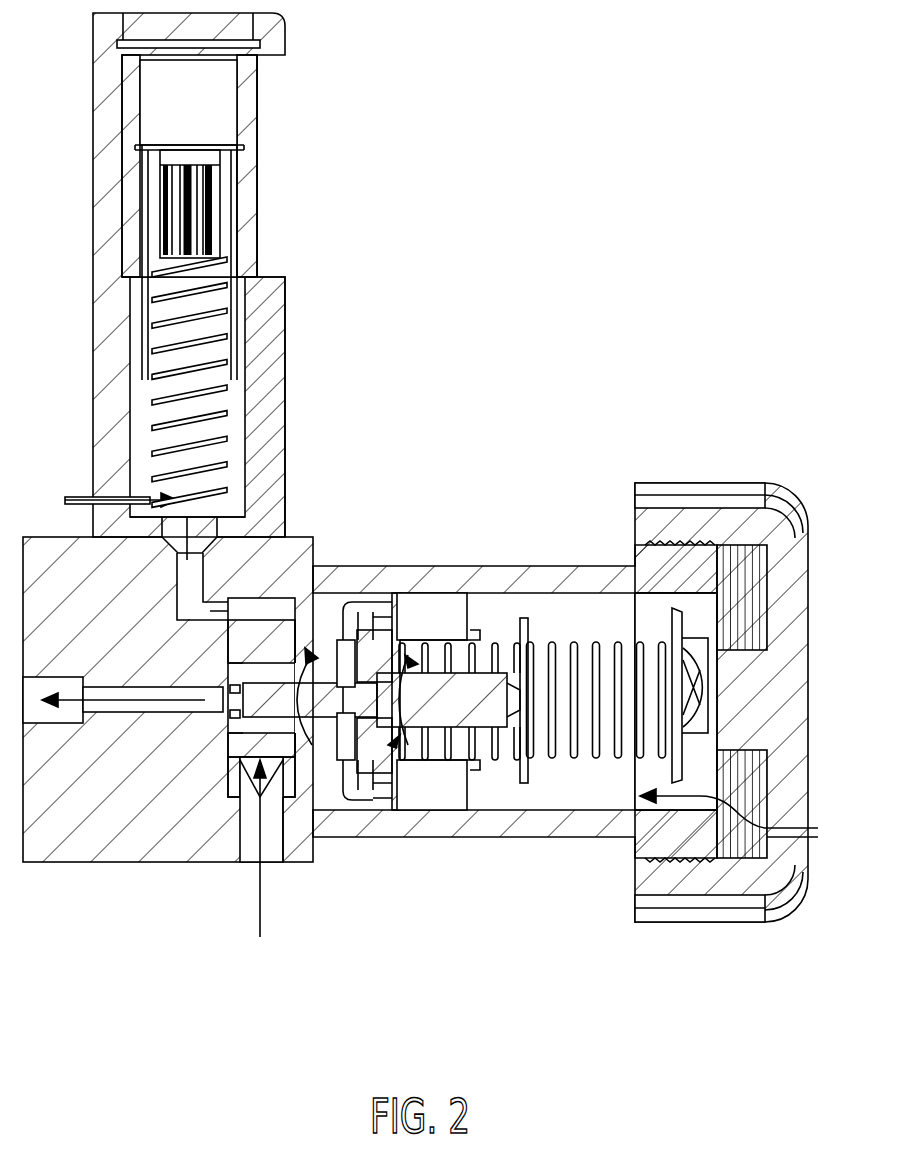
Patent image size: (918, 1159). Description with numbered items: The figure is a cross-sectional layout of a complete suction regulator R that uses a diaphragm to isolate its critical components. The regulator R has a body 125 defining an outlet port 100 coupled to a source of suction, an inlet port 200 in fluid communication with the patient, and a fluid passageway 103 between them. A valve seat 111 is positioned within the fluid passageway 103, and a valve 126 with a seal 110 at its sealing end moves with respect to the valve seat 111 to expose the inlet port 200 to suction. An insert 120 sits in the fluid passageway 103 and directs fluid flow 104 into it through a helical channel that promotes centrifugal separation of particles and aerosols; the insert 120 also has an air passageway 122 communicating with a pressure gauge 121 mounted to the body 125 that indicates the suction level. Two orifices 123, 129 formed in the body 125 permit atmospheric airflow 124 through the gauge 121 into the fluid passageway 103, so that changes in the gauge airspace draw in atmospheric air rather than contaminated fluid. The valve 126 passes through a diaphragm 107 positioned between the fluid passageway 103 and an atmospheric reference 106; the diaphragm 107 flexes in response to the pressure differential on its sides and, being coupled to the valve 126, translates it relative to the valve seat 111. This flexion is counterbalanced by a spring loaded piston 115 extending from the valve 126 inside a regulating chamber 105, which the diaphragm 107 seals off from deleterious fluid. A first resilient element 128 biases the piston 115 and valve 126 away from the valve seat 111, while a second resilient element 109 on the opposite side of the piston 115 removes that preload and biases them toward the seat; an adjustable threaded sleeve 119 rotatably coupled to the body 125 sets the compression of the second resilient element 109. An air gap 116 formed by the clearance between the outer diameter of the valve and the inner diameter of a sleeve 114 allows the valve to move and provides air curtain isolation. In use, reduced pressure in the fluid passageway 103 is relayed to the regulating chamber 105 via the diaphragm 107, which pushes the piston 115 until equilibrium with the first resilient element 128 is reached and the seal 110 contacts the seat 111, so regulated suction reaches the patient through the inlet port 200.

The outlet port 100 is at (72, 862).
The fluid passageway 103 is at (335, 600).
The fluid flow 104 is at (258, 908).
The regulating chamber 105 is at (505, 600).
The atmospheric reference 106 is at (805, 845).
The diaphragm 107 is at (365, 800).
The second resilient element 109 is at (606, 762).
The seal 110 is at (300, 640).
The valve seat 111 is at (105, 862).
The sleeve 114 is at (410, 595).
The spring loaded piston 115 is at (478, 683).
The air gap 116 is at (447, 640).
The adjustable threaded sleeve 119 is at (748, 860).
The insert 120 is at (182, 862).
The pressure gauge 121 is at (212, 115).
The air passageway 122 is at (300, 665).
The orifice 123 is at (103, 493).
The atmospheric airflow 124 is at (240, 685).
The body 125 is at (293, 862).
The valve 126 is at (348, 795).
The first resilient element 128 is at (467, 748).
The orifice 129 is at (178, 565).
The inlet port 200 is at (250, 862).
The regulator R is at (42, 545).